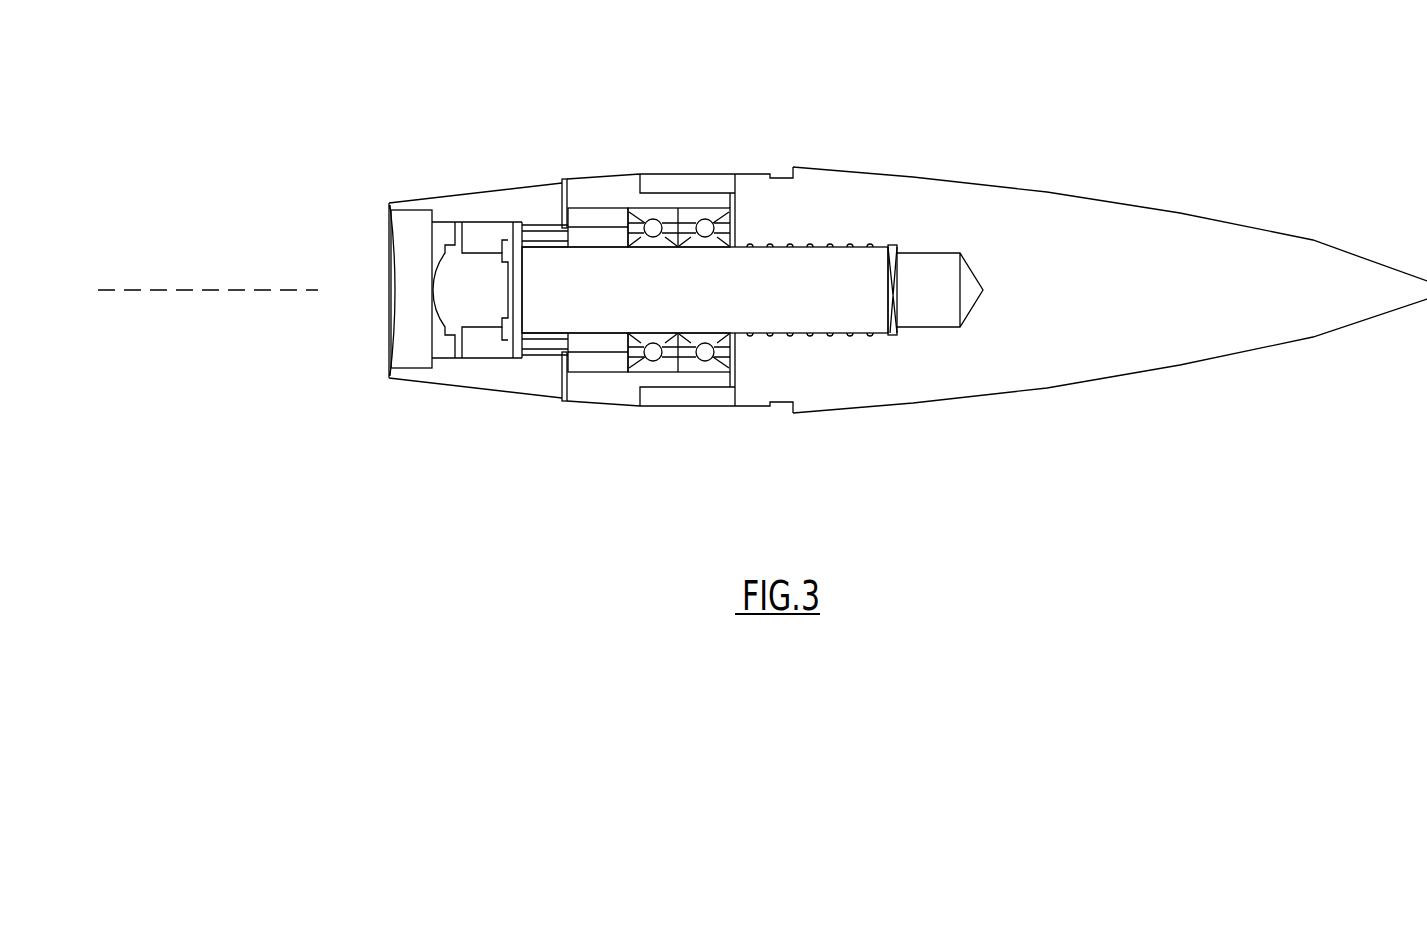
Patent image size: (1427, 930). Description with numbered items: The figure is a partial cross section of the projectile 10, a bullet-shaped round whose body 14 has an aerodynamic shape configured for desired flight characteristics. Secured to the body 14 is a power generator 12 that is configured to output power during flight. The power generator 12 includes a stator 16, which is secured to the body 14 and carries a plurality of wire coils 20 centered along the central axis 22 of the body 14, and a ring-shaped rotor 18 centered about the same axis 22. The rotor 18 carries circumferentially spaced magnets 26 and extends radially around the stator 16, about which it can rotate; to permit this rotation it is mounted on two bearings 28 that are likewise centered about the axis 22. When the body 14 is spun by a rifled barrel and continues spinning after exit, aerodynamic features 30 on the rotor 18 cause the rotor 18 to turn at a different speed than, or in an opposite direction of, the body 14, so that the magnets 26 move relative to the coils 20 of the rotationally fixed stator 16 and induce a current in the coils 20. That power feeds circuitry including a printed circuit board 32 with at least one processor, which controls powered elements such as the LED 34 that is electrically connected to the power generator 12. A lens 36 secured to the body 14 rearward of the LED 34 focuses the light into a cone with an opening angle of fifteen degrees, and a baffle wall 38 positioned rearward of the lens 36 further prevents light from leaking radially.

The projectile 10 is at (1133, 90).
The power generator 12 is at (698, 207).
The body 14 is at (1143, 270).
The stator 16 is at (806, 303).
The rotor 18 is at (570, 176).
The wire coils 20 is at (603, 348).
The central axis 22 is at (222, 277).
The magnets 26 is at (603, 215).
The bearings 28 is at (706, 373).
The aerodynamic features 30 is at (568, 405).
The printed circuit board 32 is at (507, 355).
The LED 34 is at (481, 223).
The lens 36 is at (408, 342).
The baffle wall 38 is at (402, 200).